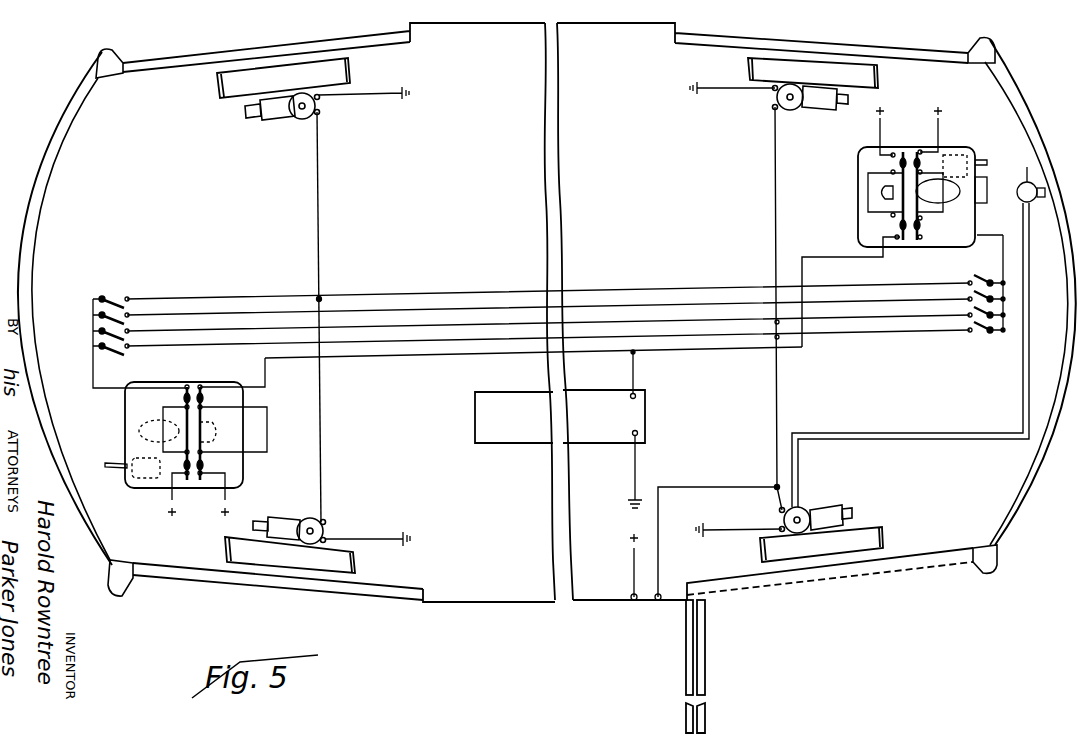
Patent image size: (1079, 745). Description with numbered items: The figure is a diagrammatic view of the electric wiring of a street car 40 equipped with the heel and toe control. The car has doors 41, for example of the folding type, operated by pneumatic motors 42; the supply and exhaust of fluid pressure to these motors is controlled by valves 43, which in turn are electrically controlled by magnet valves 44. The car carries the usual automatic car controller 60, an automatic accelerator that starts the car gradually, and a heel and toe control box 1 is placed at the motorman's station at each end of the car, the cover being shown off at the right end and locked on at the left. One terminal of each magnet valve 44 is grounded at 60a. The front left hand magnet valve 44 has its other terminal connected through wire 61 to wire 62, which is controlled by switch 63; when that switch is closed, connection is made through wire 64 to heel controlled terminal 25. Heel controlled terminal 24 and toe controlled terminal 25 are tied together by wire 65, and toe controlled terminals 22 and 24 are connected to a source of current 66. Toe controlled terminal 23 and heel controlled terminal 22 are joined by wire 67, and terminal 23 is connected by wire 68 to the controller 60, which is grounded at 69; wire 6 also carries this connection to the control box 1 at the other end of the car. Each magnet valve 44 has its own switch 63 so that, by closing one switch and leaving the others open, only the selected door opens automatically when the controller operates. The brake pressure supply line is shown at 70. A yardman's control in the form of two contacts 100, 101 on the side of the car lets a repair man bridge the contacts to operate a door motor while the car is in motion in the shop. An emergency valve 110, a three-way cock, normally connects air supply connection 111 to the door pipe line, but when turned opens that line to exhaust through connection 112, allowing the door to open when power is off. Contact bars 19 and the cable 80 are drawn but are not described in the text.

The heel and toe control box 1 is at (152, 379).
The wire 6 is at (403, 358).
The contact bars 19 is at (925, 247).
The toe controlled terminal 22 is at (898, 215).
The toe controlled terminal 23 is at (207, 386).
The heel controlled terminal 24 is at (909, 159).
The heel controlled terminal 25 is at (922, 235).
The car 40 is at (58, 160).
The doors 41 is at (296, 42).
The pneumatic motors 42 is at (335, 70).
The valves 43 is at (275, 116).
The magnet valves 44 is at (320, 110).
The automatic car controller 60 is at (520, 447).
The ground 60a is at (550, 320).
The wire 61 is at (773, 184).
The wire 62 is at (909, 340).
The switch 63 is at (1000, 298).
The wire 64 is at (1012, 229).
The wire 65 is at (968, 170).
The source of current 66 is at (940, 110).
The wire 67 is at (866, 198).
The wire 68 is at (729, 358).
The ground 69 is at (620, 478).
The brake pressure supply line 70 is at (988, 162).
The cable 80 is at (782, 400).
The contact 100 is at (630, 604).
The contact 101 is at (659, 606).
The emergency valve 110 is at (1033, 200).
The air supply connection 111 is at (1004, 180).
The exhaust connection 112 is at (1007, 207).